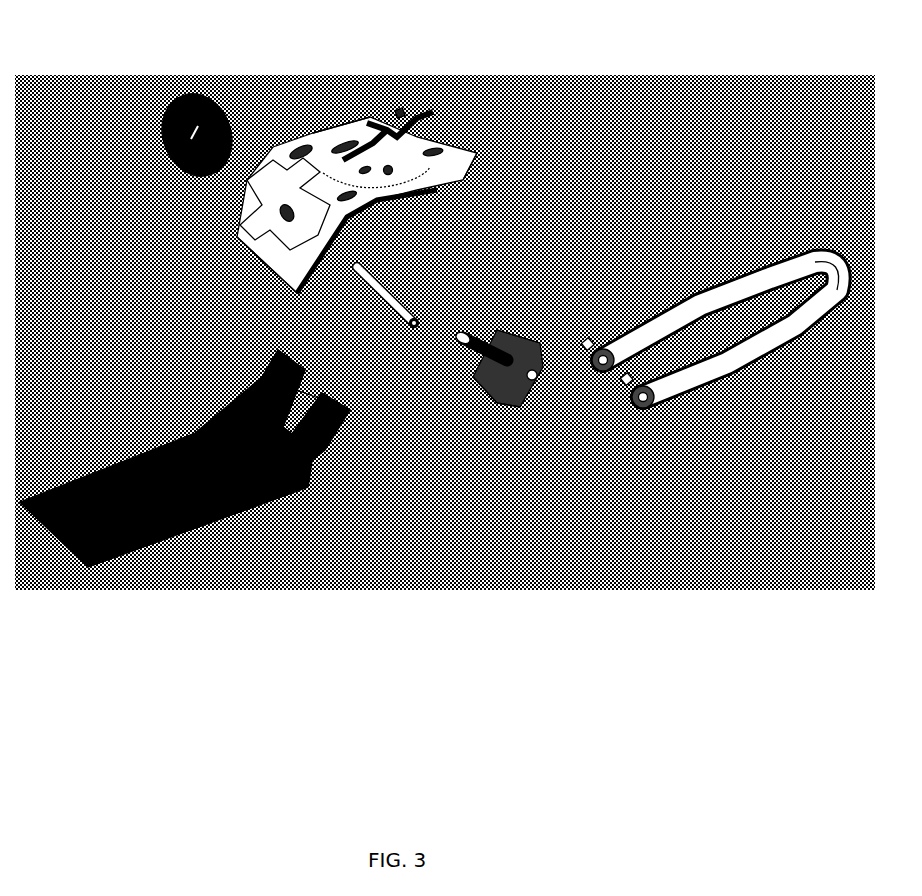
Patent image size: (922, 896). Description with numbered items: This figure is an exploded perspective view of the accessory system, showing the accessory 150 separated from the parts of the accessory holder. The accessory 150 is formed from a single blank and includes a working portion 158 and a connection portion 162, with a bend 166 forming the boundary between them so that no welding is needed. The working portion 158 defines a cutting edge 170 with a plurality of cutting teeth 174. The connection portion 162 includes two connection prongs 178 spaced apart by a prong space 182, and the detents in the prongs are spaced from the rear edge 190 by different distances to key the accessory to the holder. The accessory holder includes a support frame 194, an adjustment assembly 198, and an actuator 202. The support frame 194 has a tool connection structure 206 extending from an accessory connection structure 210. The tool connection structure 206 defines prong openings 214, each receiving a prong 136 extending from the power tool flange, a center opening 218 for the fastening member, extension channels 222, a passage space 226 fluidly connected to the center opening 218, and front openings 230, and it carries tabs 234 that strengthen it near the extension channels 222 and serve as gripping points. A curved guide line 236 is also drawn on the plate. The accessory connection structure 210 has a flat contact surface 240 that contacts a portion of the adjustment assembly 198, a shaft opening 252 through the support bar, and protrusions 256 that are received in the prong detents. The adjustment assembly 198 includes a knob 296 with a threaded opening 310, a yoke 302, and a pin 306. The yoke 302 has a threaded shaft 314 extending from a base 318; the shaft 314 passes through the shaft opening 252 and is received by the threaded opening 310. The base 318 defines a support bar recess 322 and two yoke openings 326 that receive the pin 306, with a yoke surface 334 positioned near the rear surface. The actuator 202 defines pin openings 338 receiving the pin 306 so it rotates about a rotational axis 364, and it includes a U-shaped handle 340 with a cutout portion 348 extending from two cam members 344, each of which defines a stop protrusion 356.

The accessory 150 is at (118, 410).
The prong 136 is at (262, 366).
The working portion 158 is at (152, 540).
The connection portion 162 is at (310, 487).
The bend 166 is at (302, 494).
The cutting edge 170 is at (64, 555).
The cutting teeth 174 is at (48, 525).
The connection prongs 178 is at (284, 354).
The prong space 182 is at (313, 380).
The rear edge 190 is at (350, 410).
The support frame 194 is at (290, 95).
The adjustment assembly 198 is at (432, 392).
The actuator 202 is at (758, 258).
The tool connection structure 206 is at (480, 170).
The accessory connection structure 210 is at (258, 205).
The prong openings 214 is at (400, 110).
The center opening 218 is at (431, 108).
The extension channels 222 is at (383, 118).
The passage space 226 is at (440, 122).
The front openings 230 is at (290, 143).
The tabs 234 is at (340, 142).
The guide arc 236 is at (360, 222).
The contact surface 240 is at (292, 246).
The shaft opening 252 is at (276, 207).
The protrusions 256 is at (318, 275).
The knob 296 is at (172, 108).
The yoke 302 is at (518, 298).
The pin 306 is at (405, 300).
The threaded opening 310 is at (194, 125).
The threaded shaft 314 is at (470, 330).
The base 318 is at (510, 398).
The support bar recess 322 is at (522, 342).
The yoke openings 326 is at (538, 392).
The yoke surface 334 is at (478, 385).
The pin openings 338 is at (604, 345).
The handle 340 is at (812, 302).
The cam members 344 is at (578, 365).
The cutout portion 348 is at (703, 288).
The stop protrusion 356 is at (590, 338).
The rotational axis 364 is at (422, 328).